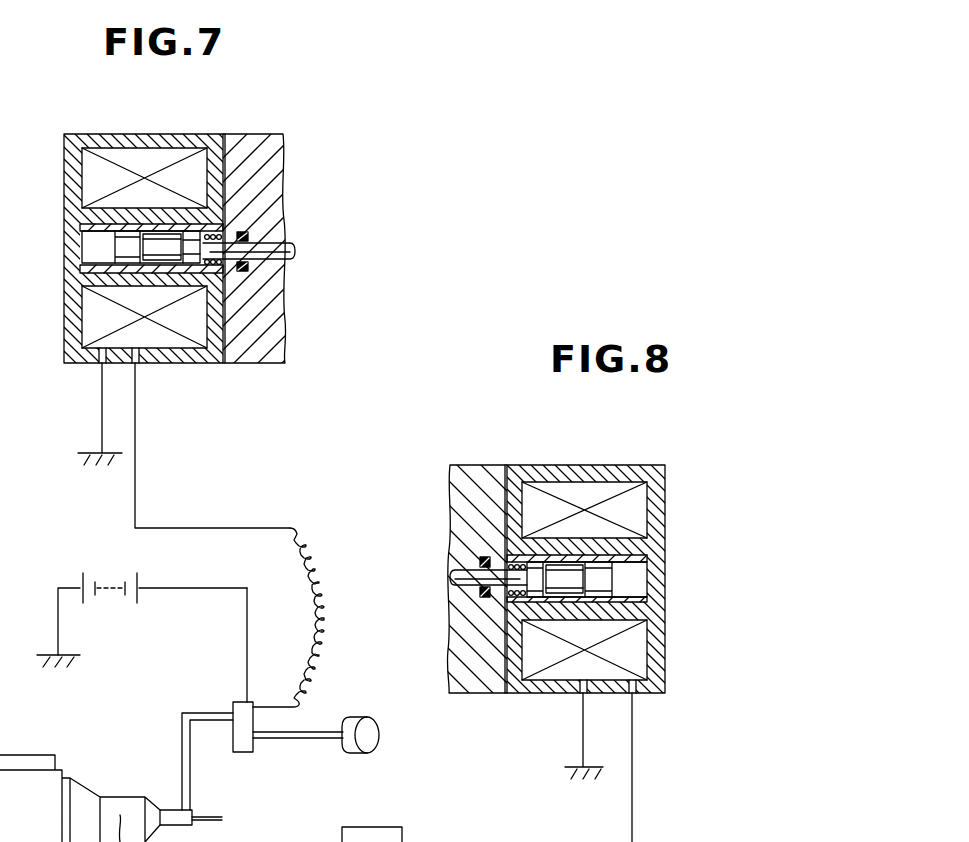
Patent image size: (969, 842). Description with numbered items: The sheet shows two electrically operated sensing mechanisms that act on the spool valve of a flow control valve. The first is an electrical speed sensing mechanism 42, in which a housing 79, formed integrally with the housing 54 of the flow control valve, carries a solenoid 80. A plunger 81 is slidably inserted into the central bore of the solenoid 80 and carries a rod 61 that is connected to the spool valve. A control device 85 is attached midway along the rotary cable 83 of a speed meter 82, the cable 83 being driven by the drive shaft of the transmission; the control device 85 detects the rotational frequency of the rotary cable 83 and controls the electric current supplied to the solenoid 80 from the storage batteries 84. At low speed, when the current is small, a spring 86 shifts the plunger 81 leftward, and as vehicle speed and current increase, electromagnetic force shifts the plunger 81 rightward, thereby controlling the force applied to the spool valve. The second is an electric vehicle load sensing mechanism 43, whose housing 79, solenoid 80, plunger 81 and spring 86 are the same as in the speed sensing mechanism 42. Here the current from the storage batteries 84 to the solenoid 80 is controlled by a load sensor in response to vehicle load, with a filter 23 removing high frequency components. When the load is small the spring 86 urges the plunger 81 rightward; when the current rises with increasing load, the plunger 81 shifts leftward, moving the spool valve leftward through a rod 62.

In FIG. 7, the housing of the flow control valve 54 is at (262, 140).
In FIG. 8, the housing of the flow control valve 54 is at (481, 475).
In FIG. 7, the housing 79 is at (176, 133).
In FIG. 8, the housing 79 is at (593, 468).
In FIG. 7, the solenoid 80 is at (92, 172).
In FIG. 8, the solenoid 80 is at (640, 493).
In FIG. 7, the plunger 81 is at (120, 245).
In FIG. 8, the plunger 81 is at (603, 568).
In FIG. 7, the spring 86 is at (203, 270).
In FIG. 8, the spring 86 is at (512, 553).
In FIG. 7, the rod 61 is at (290, 246).
In FIG. 8, the rod 62 is at (458, 578).
In FIG. 7, the electrical speed sensing mechanism 42 is at (320, 361).
In FIG. 8, the electric vehicle load sensing mechanism 43 is at (686, 707).
In FIG. 7, the storage batteries 84 is at (118, 593).
In FIG. 7, the control device 85 is at (242, 752).
In FIG. 7, the rotary cable 83 is at (324, 740).
In FIG. 7, the speed meter 82 is at (373, 733).
In FIG. 7, the filter 23 is at (390, 830).